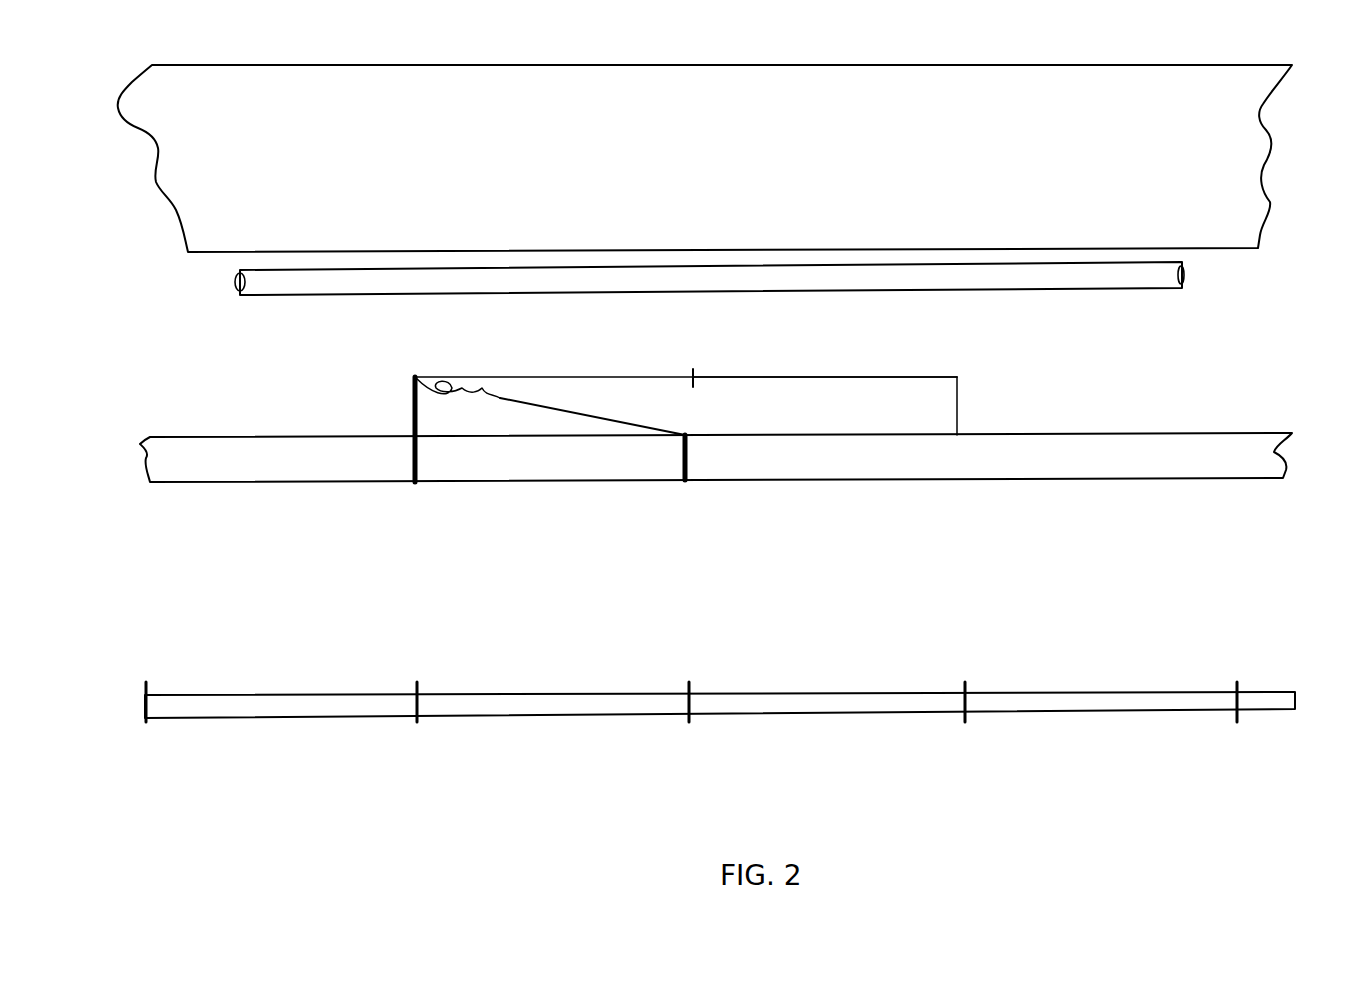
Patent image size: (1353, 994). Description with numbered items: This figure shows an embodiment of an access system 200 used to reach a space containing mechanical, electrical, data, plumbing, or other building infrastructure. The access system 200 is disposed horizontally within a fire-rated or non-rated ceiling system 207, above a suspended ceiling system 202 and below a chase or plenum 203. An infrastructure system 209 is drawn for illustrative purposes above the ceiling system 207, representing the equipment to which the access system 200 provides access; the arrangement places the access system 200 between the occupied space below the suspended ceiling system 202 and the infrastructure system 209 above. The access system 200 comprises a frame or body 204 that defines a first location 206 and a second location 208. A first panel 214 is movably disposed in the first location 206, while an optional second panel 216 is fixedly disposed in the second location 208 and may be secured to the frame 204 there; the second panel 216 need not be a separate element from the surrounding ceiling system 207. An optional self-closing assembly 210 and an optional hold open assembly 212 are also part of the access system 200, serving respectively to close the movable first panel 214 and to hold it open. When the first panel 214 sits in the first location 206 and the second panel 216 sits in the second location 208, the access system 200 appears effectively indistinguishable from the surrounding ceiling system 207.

The access system 200 is at (410, 553).
The suspended ceiling system 202 is at (548, 705).
The chase or plenum 203 is at (1160, 320).
The frame 204 is at (425, 382).
The first location 206 is at (525, 425).
The ceiling system 207 is at (250, 455).
The second location 208 is at (848, 408).
The infrastructure system 209 is at (264, 290).
The self-closing assembly 210 is at (605, 415).
The hold open assembly 212 is at (688, 372).
The first panel 214 is at (640, 455).
The second panel 216 is at (845, 458).